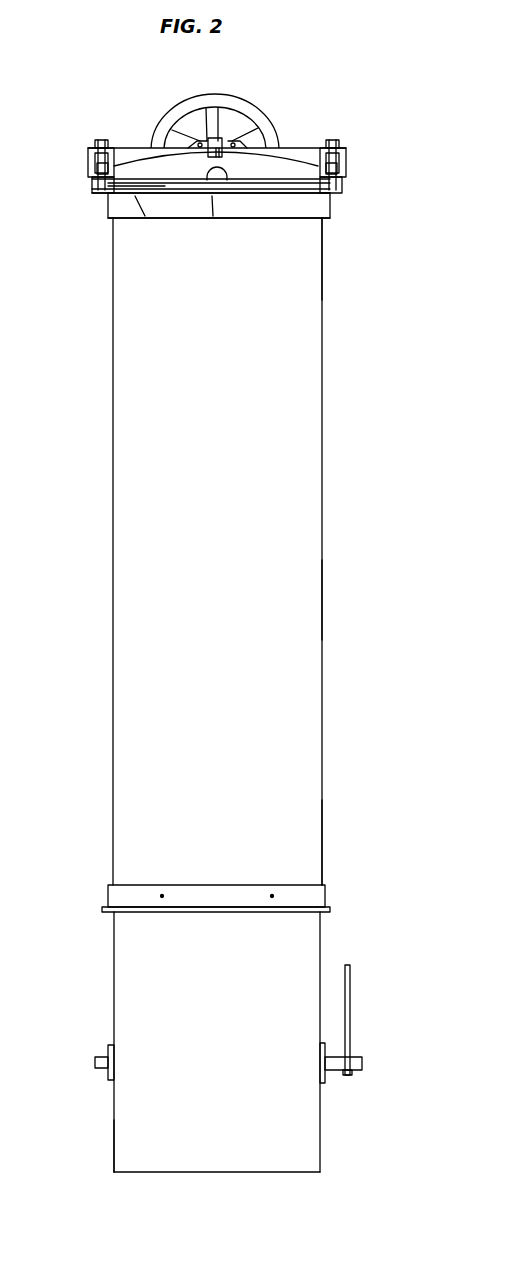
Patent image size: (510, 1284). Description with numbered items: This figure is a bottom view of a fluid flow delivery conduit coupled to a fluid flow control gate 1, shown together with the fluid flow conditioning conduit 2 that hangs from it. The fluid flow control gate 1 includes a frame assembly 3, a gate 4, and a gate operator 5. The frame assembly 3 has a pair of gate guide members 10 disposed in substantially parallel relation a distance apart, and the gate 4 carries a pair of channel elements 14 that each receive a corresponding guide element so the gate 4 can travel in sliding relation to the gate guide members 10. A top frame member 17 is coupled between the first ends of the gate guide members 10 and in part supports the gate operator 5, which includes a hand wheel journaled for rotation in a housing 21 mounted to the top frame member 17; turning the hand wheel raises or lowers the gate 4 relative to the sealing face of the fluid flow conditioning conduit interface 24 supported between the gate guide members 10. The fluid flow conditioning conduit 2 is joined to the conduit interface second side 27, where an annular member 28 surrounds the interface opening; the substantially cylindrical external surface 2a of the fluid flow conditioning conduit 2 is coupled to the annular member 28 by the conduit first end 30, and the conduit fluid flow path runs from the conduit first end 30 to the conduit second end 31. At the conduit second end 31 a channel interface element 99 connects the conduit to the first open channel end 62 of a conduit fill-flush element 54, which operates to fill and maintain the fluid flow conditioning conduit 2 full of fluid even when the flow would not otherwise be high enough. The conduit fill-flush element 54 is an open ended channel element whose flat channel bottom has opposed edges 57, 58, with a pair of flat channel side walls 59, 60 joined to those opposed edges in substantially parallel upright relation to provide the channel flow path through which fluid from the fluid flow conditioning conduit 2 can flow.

The fluid flow control gate 1 is at (370, 160).
The fluid flow conditioning conduit 2 is at (82, 518).
The cylindrical external surface 2a is at (303, 598).
The frame assembly 3 is at (75, 163).
The gate 4 is at (283, 177).
The gate operator 5 is at (165, 90).
The gate guide members 10 is at (88, 149).
The channel elements 14 is at (103, 148).
The top frame member 17 is at (138, 150).
The housing 21 is at (228, 140).
The fluid flow conditioning conduit interface 24 is at (90, 204).
The conduit interface second side 27 is at (212, 198).
The annular member 28 is at (140, 208).
The conduit first end 30 is at (322, 258).
The conduit second end 31 is at (322, 840).
The conduit fill-flush element 54 is at (93, 1097).
The opposed edge 57 is at (113, 1020).
The opposed edge 58 is at (320, 943).
The channel side wall 59 is at (113, 1152).
The channel side wall 60 is at (322, 1143).
The first open channel end 62 is at (113, 932).
The channel interface element 99 is at (316, 898).